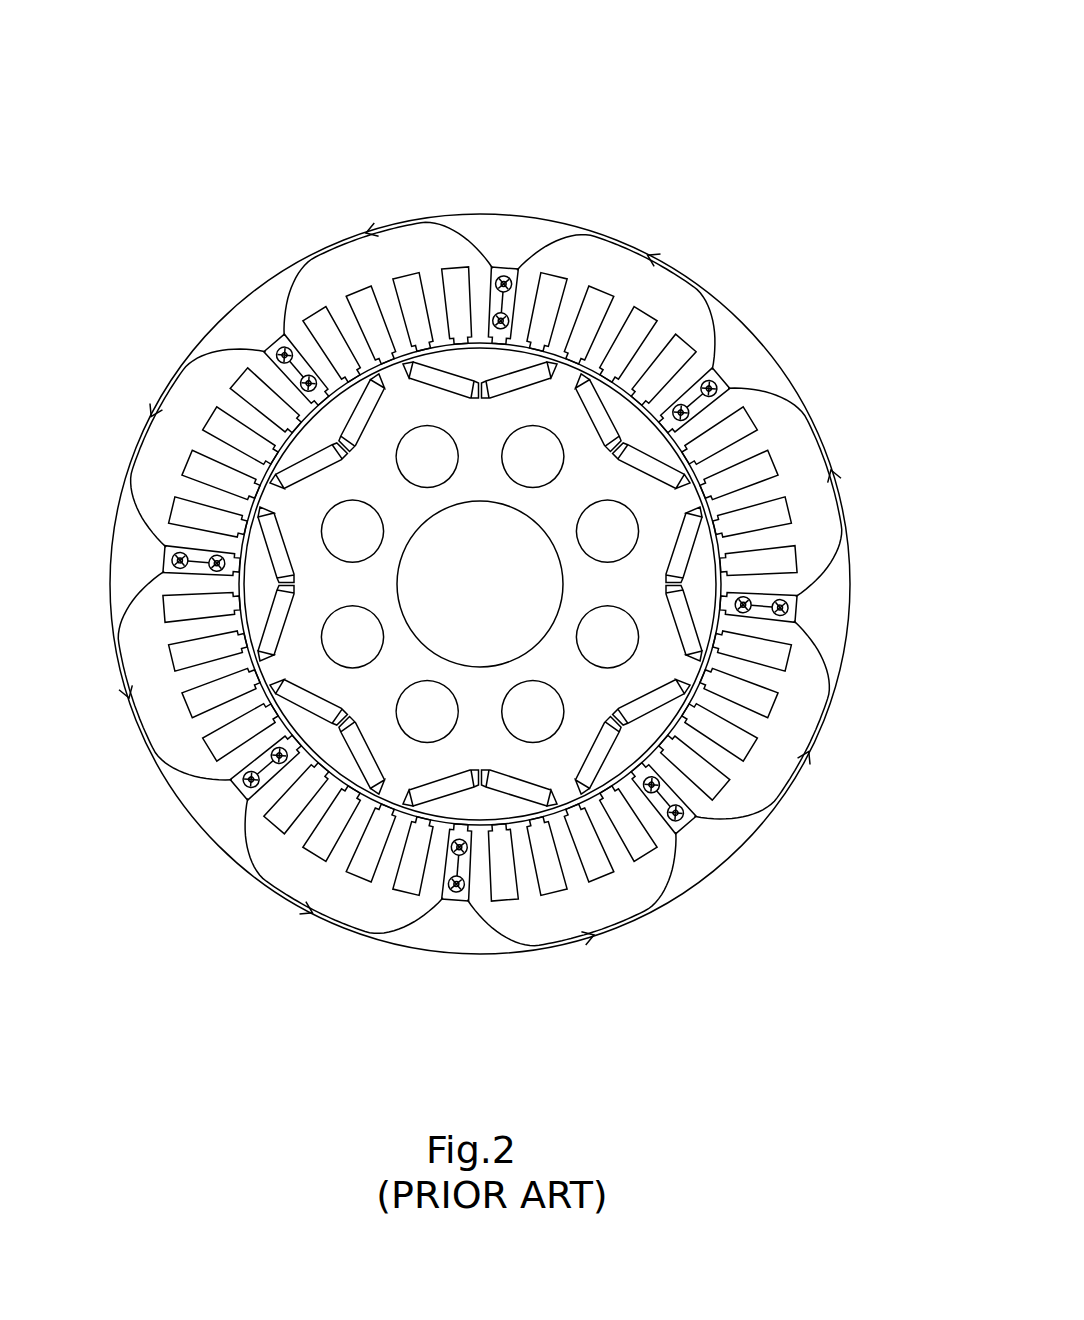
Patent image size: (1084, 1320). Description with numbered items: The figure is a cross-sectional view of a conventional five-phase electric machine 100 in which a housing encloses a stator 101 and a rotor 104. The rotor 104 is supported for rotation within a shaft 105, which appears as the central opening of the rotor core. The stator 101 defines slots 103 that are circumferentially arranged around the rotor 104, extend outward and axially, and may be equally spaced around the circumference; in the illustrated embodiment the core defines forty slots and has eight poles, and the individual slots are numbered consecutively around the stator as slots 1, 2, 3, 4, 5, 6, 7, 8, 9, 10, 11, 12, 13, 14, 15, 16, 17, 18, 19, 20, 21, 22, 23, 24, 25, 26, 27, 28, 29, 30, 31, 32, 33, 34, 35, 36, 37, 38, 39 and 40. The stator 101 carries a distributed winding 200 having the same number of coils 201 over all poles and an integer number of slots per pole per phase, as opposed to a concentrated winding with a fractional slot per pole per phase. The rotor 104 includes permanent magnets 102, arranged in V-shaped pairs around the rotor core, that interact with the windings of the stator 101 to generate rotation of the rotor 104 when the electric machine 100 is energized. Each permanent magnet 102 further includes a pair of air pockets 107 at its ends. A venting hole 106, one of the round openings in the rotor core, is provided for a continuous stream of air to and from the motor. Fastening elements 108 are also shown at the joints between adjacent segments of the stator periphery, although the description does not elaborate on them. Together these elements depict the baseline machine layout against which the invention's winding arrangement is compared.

The electric machine 100 is at (671, 109).
The stator 101 is at (492, 238).
The permanent magnet 102 is at (593, 403).
The slot 103 is at (770, 517).
The rotor 104 is at (638, 678).
The shaft 105 is at (498, 630).
The venting hole 106 is at (421, 708).
The air pocket 107 is at (345, 790).
The fastening screw 108 is at (307, 381).
The winding 200 is at (275, 232).
The coil 201 is at (418, 227).
The stator slot 1 is at (767, 605).
The stator slot 2 is at (761, 649).
The stator slot 3 is at (745, 692).
The stator slot 4 is at (724, 733).
The stator slot 5 is at (696, 770).
The stator slot 6 is at (664, 803).
The stator slot 7 is at (626, 830).
The stator slot 8 is at (587, 851).
The stator slot 9 is at (545, 867).
The stator slot 10 is at (501, 875).
The stator slot 11 is at (458, 875).
The stator slot 12 is at (414, 867).
The stator slot 13 is at (371, 851).
The stator slot 14 is at (330, 830).
The stator slot 15 is at (292, 803).
The stator slot 16 is at (260, 770).
The stator slot 17 is at (232, 733).
The stator slot 18 is at (211, 692).
The stator slot 19 is at (196, 649).
The stator slot 20 is at (188, 605).
The stator slot 21 is at (188, 562).
The stator slot 22 is at (196, 519).
The stator slot 23 is at (211, 475).
The stator slot 24 is at (232, 435).
The stator slot 25 is at (260, 397).
The stator slot 26 is at (292, 365).
The stator slot 27 is at (330, 337).
The stator slot 28 is at (371, 316).
The stator slot 29 is at (414, 301).
The stator slot 30 is at (458, 293).
The stator slot 31 is at (501, 293).
The stator slot 32 is at (545, 301).
The stator slot 33 is at (589, 316).
The stator slot 34 is at (629, 337).
The stator slot 35 is at (666, 365).
The stator slot 36 is at (699, 397).
The stator slot 37 is at (726, 435).
The stator slot 38 is at (747, 475).
The stator slot 39 is at (763, 519).
The stator slot 40 is at (770, 562).